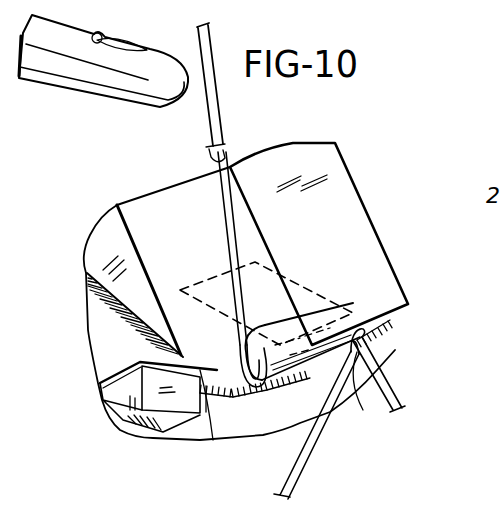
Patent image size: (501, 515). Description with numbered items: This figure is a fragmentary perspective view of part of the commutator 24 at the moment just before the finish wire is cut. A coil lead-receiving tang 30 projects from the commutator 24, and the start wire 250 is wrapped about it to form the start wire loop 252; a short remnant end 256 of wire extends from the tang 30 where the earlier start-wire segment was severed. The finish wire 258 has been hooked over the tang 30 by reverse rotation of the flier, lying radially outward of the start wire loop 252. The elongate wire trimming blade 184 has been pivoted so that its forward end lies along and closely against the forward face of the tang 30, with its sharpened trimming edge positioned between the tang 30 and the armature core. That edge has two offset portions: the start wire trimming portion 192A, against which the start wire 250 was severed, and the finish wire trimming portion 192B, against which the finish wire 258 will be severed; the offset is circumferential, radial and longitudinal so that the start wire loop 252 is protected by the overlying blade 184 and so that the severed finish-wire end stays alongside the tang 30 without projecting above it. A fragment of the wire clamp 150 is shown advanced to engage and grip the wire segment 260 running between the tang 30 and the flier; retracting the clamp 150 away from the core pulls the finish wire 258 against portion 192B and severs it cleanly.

The wire clamp 150 is at (99, 106).
The wire segment 260 is at (210, 157).
The wire trimming blade 184 is at (333, 137).
The tang 30 is at (200, 282).
The commutator 24 is at (99, 355).
The finish wire trimming portion 192B is at (203, 435).
The start wire trimming portion 192A is at (385, 322).
The start wire loop 252 is at (280, 392).
The start wire 250 is at (394, 383).
The remnant end 256 is at (363, 397).
The finish wire 258 is at (312, 453).